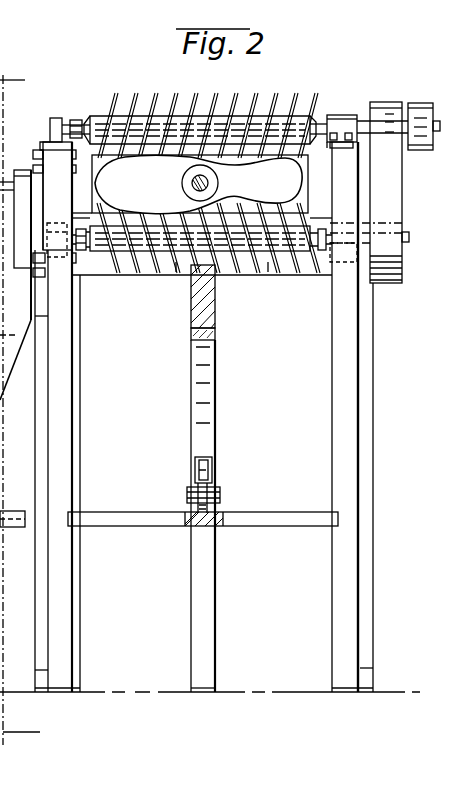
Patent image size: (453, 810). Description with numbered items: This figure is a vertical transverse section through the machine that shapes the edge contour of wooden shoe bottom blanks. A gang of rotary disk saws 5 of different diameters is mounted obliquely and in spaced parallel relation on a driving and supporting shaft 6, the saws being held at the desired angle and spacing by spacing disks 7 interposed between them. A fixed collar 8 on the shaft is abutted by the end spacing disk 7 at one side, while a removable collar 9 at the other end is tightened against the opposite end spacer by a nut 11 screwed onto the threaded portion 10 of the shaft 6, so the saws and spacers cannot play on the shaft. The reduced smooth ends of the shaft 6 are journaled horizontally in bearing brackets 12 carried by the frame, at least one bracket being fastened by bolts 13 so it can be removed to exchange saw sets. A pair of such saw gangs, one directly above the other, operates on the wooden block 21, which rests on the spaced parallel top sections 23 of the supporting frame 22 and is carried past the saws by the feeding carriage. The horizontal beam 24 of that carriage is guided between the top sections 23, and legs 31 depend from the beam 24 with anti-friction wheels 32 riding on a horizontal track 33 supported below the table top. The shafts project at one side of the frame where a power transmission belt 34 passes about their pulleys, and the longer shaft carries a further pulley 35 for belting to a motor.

The rotary disk cutters or saws 5 is at (229, 94).
The driving and supporting shaft 6 is at (50, 126).
The spacing disks 7 is at (305, 119).
The fixed collar 8 is at (323, 141).
The removable collar 9 is at (81, 124).
The threaded portion 10 is at (67, 120).
The nut 11 is at (77, 138).
The bearing brackets 12 is at (45, 141).
The bolts 13 is at (38, 165).
The block or blank of wood 21 is at (300, 203).
The supporting frame 22 is at (336, 410).
The top sections 23 is at (177, 270).
The horizontal beam 24 is at (215, 328).
The legs 31 is at (198, 412).
The anti-friction wheels 32 is at (212, 470).
The horizontal track 33 is at (216, 524).
The power transmission belt 34 is at (383, 228).
The pulley 35 is at (415, 104).